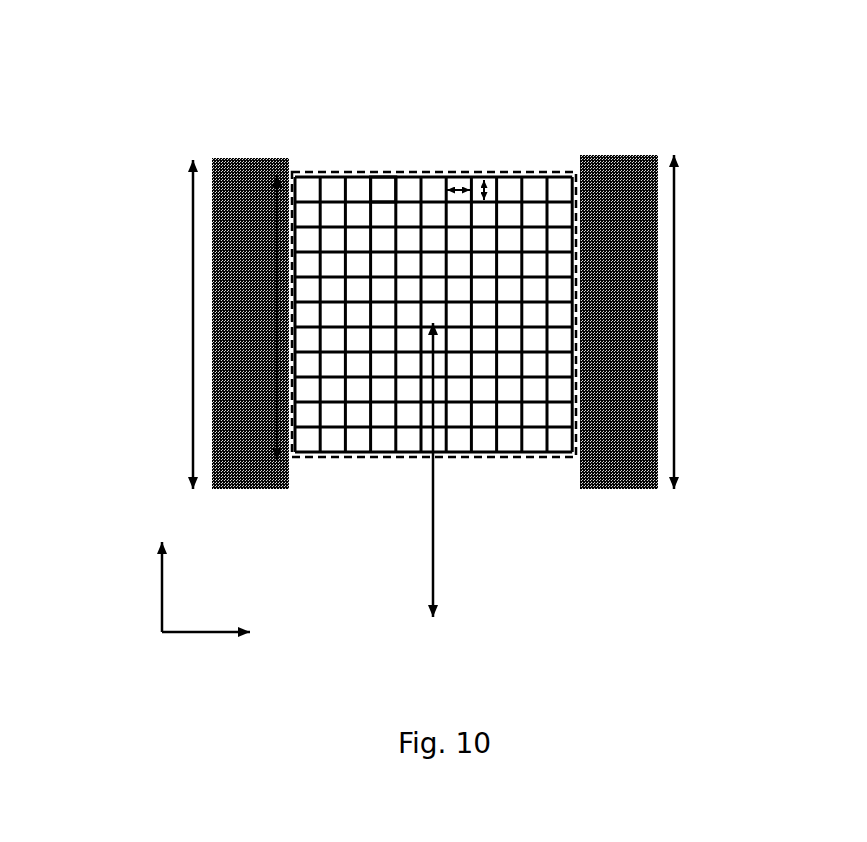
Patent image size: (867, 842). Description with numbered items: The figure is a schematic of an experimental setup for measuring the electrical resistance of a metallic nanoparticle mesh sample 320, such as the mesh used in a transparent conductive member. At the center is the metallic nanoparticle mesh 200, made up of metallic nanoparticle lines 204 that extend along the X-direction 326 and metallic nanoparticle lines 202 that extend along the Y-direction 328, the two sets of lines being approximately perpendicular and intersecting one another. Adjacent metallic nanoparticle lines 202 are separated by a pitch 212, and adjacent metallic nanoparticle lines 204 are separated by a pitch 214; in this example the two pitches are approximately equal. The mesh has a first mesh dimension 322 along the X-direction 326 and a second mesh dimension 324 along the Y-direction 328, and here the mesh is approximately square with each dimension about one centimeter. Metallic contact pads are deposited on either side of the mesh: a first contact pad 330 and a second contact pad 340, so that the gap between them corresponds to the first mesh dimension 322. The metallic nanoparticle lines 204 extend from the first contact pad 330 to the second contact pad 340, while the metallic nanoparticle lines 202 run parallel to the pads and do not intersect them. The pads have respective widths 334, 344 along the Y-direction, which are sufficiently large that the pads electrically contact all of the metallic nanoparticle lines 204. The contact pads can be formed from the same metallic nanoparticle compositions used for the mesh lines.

The metallic nanoparticle mesh 200 is at (305, 172).
The metallic nanoparticle lines 202 is at (325, 187).
The metallic nanoparticle lines 204 is at (382, 198).
The pitch 212 is at (458, 188).
The pitch 214 is at (493, 188).
The metallic nanoparticle mesh sample 320 is at (262, 78).
The first mesh dimension 322 is at (461, 472).
The second mesh dimension 324 is at (275, 310).
The X-direction 326 is at (228, 633).
The Y-direction 328 is at (160, 580).
The first contact pad 330 is at (243, 157).
The width 334 is at (192, 267).
The second contact pad 340 is at (622, 153).
The width 344 is at (677, 275).